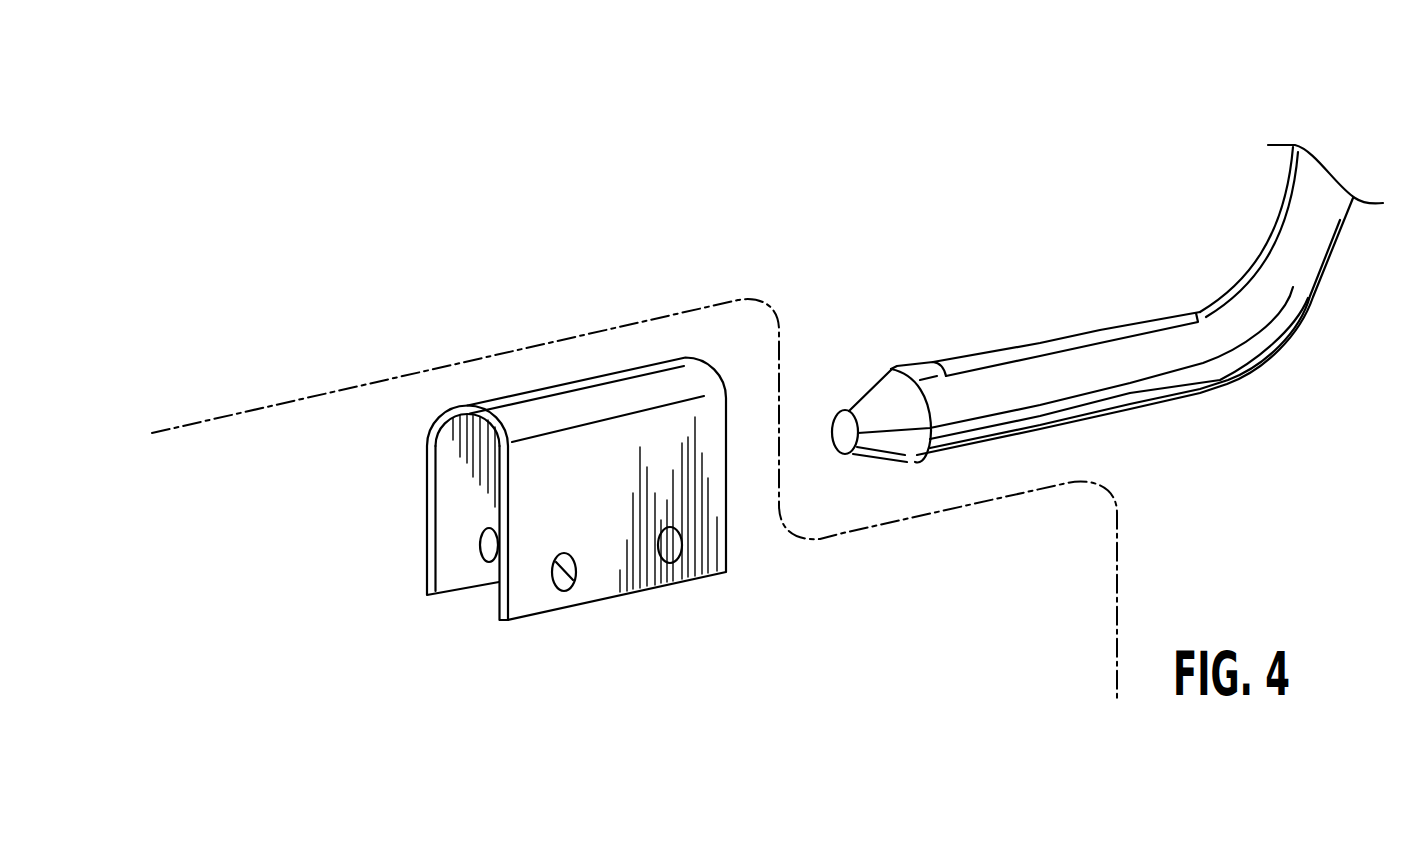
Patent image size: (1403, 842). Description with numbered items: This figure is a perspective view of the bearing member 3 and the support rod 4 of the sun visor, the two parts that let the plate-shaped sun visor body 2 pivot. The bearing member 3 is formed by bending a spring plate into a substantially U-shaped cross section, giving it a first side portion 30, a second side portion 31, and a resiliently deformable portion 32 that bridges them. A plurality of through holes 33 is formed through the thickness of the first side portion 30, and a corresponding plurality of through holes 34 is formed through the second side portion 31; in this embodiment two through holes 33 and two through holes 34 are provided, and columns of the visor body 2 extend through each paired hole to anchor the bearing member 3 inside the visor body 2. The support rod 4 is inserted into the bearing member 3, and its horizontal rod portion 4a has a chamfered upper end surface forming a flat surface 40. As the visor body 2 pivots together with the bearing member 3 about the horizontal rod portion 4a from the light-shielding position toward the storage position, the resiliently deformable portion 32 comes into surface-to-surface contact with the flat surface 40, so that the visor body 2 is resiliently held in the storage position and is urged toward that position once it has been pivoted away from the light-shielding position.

The sun visor body 2 is at (276, 401).
The bearing member 3 is at (429, 421).
The first side portion 30 is at (530, 598).
The second side portion 31 is at (450, 530).
The resiliently deformable portion 32 is at (575, 407).
The through holes 33 is at (668, 572).
The through holes 34 is at (490, 548).
The support rod 4 is at (1231, 244).
The flat surface 40 is at (1012, 357).
The horizontal rod portion 4a is at (1118, 387).